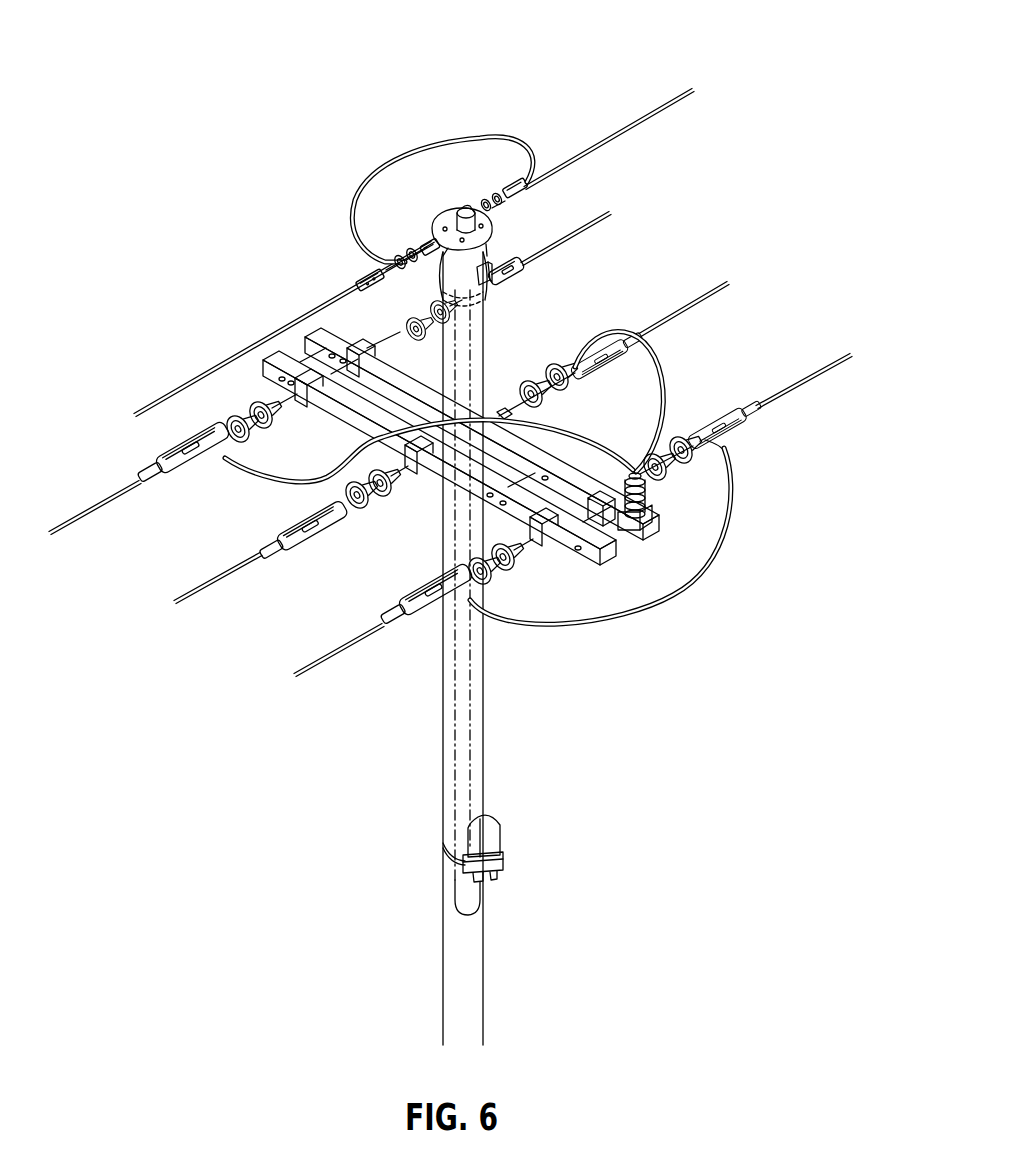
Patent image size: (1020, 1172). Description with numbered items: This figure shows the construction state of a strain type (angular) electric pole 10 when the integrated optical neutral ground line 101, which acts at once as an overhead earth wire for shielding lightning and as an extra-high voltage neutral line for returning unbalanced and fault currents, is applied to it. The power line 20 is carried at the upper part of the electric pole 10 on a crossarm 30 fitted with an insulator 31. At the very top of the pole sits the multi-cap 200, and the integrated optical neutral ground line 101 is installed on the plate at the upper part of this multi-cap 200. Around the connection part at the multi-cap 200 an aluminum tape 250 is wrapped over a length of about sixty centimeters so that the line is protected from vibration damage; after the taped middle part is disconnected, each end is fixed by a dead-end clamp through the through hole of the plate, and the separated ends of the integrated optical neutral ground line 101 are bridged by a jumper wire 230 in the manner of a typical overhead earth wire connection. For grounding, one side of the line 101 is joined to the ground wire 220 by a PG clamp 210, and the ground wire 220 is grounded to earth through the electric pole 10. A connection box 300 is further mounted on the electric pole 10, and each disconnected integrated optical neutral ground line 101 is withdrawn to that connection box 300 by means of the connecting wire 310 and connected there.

The electric pole 10 is at (485, 722).
The power line 20 is at (790, 385).
The crossarm 30 is at (648, 535).
The insulator 31 is at (683, 468).
The integrated optical neutral ground line 101 is at (620, 133).
The multi-cap 200 is at (487, 248).
The PG clamp 210 is at (360, 277).
The ground wire 220 is at (423, 256).
The jumper wire 230 is at (428, 148).
The aluminum tape 250 is at (390, 250).
The connection box 300 is at (493, 842).
The connecting wire 310 is at (453, 770).